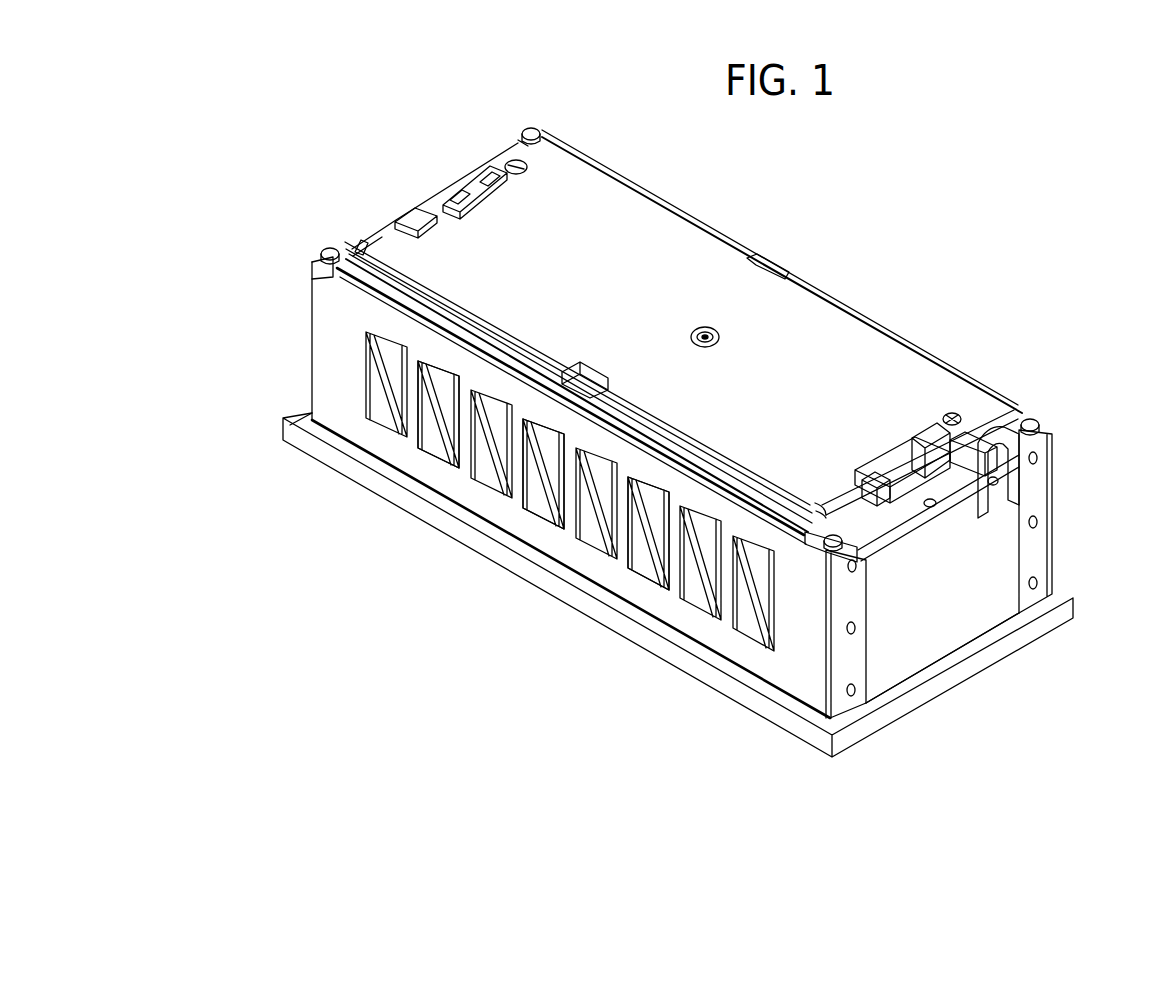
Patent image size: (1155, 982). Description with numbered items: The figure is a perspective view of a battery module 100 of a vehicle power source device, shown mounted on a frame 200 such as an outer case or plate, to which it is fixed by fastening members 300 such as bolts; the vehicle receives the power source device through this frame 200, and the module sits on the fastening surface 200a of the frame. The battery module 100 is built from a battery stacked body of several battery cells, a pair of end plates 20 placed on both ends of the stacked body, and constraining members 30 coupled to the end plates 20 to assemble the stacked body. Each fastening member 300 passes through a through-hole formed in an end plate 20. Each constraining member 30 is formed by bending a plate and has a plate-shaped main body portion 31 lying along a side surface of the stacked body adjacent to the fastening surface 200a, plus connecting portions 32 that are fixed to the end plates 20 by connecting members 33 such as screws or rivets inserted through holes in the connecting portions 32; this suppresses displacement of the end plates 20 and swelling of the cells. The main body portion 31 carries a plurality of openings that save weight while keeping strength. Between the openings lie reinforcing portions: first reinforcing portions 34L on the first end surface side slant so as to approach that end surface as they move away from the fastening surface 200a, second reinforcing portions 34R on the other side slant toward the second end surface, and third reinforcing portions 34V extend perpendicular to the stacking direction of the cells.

The battery module 100 is at (893, 288).
The end plate 20 is at (985, 600).
The constraining member 30 is at (319, 378).
The main body portion 31 is at (792, 668).
The connecting portion 32 is at (857, 662).
The connecting member 33 is at (1050, 513).
The first reinforcing portion 34L is at (445, 438).
The third reinforcing portion 34V is at (572, 488).
The second reinforcing portion 34R is at (680, 570).
The frame 200 is at (292, 448).
The fastening surface 200a is at (291, 413).
The fastening member 300 is at (532, 128).